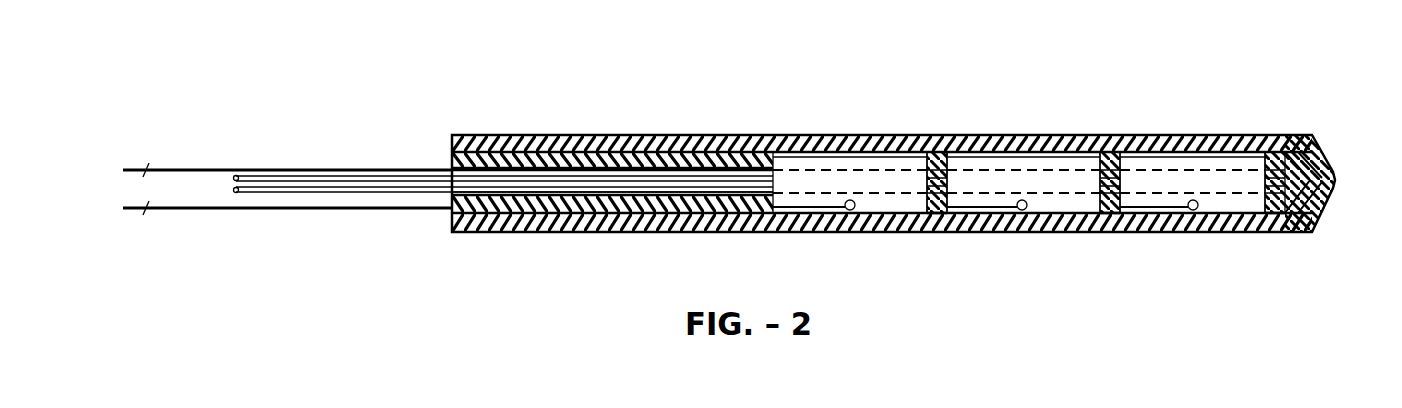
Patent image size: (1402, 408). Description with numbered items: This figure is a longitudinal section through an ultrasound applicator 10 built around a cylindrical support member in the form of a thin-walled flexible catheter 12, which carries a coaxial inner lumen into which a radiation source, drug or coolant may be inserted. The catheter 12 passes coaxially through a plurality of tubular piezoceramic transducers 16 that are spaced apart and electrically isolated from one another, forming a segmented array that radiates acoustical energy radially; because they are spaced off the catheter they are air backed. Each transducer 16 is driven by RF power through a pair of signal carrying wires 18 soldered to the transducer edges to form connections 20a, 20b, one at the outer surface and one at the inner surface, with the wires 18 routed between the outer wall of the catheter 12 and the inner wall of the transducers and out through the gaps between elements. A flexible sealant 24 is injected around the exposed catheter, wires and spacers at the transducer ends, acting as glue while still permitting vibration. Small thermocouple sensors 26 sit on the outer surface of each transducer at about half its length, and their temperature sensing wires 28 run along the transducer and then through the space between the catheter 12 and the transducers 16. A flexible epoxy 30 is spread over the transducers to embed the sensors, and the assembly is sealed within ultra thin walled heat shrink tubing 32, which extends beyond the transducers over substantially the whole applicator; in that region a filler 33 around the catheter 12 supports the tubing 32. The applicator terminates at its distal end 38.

The ultrasound applicator 10 is at (415, 98).
The catheter 12 is at (233, 178).
The tubular piezoceramic transducers 16 is at (1020, 165).
The signal carrying wires 18 is at (130, 170).
The connection 20a is at (780, 152).
The connection 20b is at (735, 135).
The sealant 24 is at (937, 233).
The thermocouple sensors 26 is at (850, 211).
The temperature sensing wires 28 is at (130, 208).
The flexible epoxy 30 is at (460, 230).
The heat shrink tubing 32 is at (543, 230).
The filler 33 is at (765, 203).
The distal end 38 is at (1340, 207).